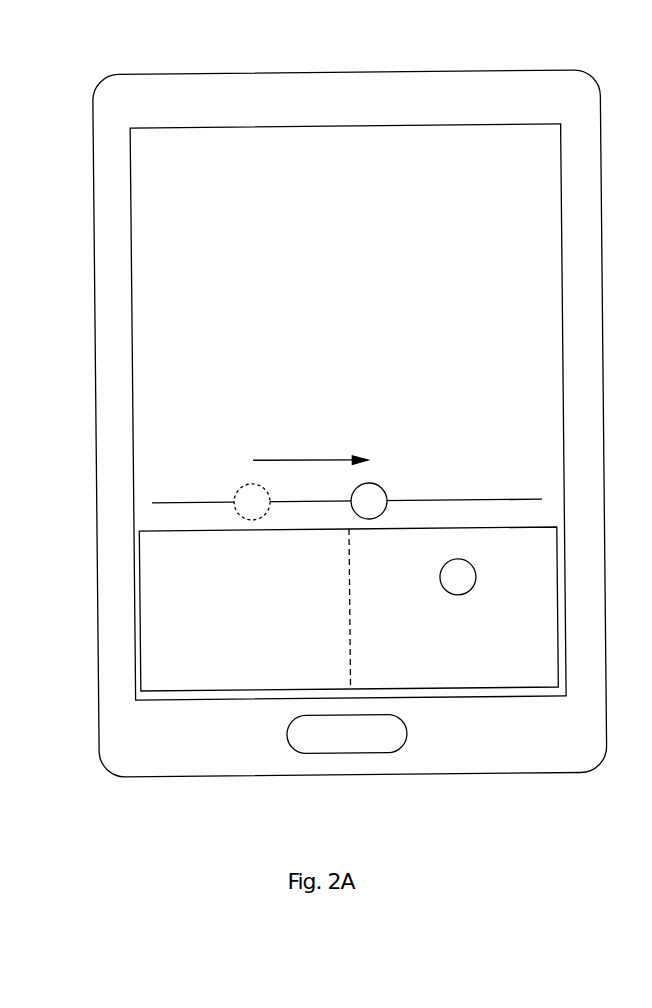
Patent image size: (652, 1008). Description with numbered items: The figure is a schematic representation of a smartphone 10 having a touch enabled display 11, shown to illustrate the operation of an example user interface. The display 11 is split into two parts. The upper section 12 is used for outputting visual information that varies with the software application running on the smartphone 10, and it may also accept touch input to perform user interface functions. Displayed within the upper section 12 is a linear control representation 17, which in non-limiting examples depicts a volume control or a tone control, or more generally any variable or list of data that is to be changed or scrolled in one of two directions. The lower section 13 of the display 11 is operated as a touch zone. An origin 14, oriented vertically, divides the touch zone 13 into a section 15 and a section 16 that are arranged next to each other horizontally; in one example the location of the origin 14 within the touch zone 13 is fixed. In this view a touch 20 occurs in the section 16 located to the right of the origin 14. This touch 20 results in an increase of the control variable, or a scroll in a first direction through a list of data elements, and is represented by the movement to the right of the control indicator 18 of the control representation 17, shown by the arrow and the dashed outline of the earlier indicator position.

The smartphone 10 is at (164, 50).
The touch enabled display 11 is at (126, 161).
The upper section 12 is at (231, 317).
The lower section 13 is at (139, 530).
The origin 14 is at (362, 583).
The section 15 is at (188, 604).
The section 16 is at (521, 612).
The linear control representation 17 is at (436, 488).
The control indicator 18 is at (384, 485).
The touch 20 is at (494, 588).